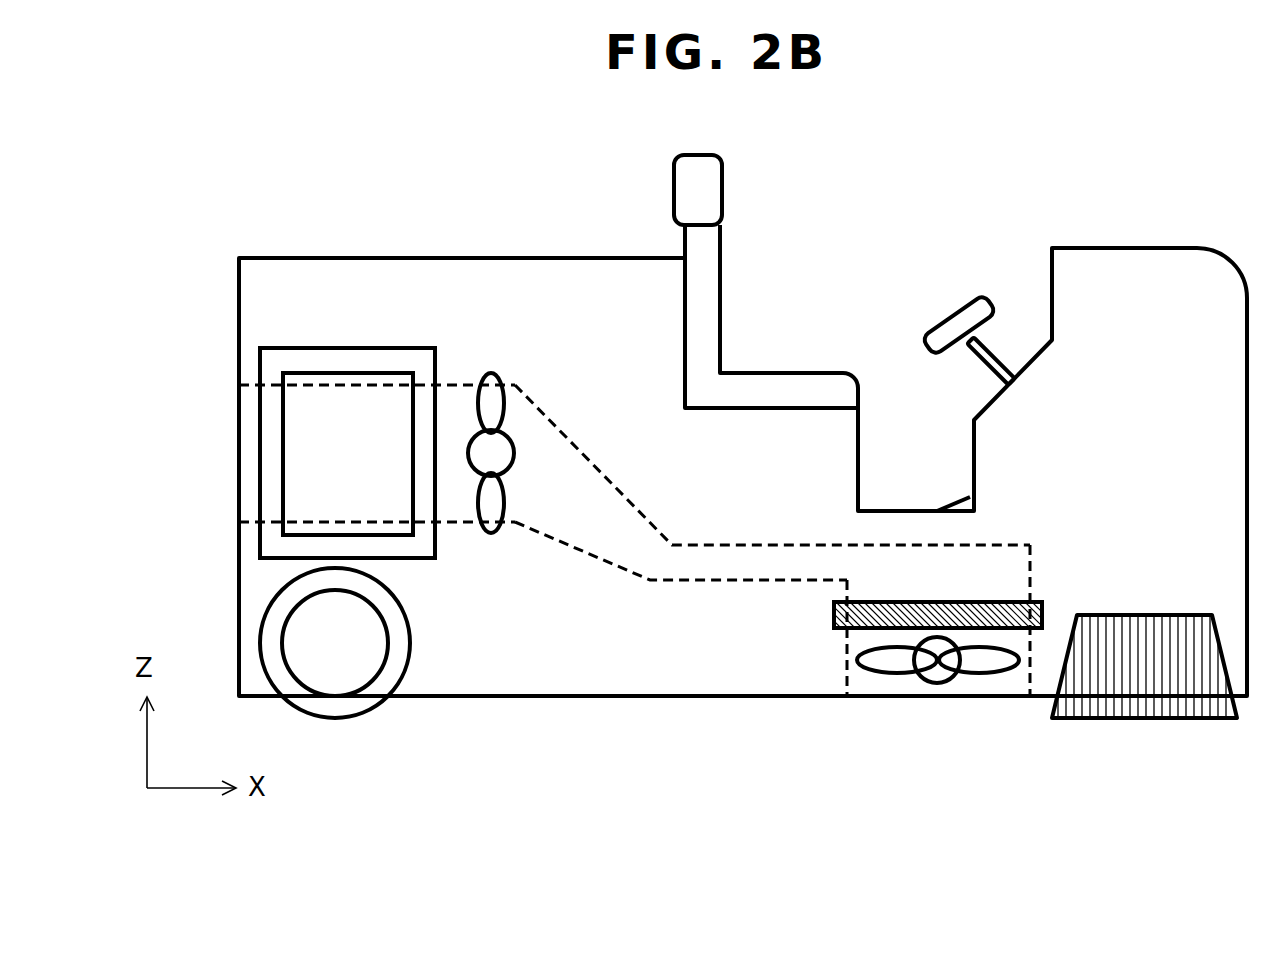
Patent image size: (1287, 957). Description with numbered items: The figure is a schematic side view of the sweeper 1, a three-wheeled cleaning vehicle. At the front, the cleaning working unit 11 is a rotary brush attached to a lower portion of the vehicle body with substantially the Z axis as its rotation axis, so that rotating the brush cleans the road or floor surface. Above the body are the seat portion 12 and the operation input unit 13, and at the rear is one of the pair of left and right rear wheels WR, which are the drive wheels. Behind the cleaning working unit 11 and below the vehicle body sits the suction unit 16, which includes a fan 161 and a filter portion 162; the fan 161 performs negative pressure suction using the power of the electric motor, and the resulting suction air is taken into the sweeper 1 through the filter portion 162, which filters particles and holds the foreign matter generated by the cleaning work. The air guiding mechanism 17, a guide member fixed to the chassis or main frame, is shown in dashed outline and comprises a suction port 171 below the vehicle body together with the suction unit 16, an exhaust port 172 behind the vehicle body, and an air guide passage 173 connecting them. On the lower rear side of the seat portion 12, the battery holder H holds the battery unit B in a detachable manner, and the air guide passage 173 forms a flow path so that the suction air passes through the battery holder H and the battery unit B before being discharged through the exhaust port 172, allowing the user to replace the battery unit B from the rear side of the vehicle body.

The sweeper 1 is at (490, 127).
The cleaning working unit 11 is at (1143, 716).
The seat portion 12 is at (786, 370).
The operation input unit 13 is at (965, 262).
The suction unit 16 is at (766, 637).
The fan 161 is at (493, 533).
The filter portion 162 is at (987, 628).
The air guiding mechanism 17 is at (575, 626).
The suction port 171 is at (860, 698).
The exhaust port 172 is at (233, 466).
The air guide passage 173 is at (650, 580).
The battery holder H is at (305, 345).
The battery unit B is at (370, 370).
The rear wheels WR is at (340, 717).